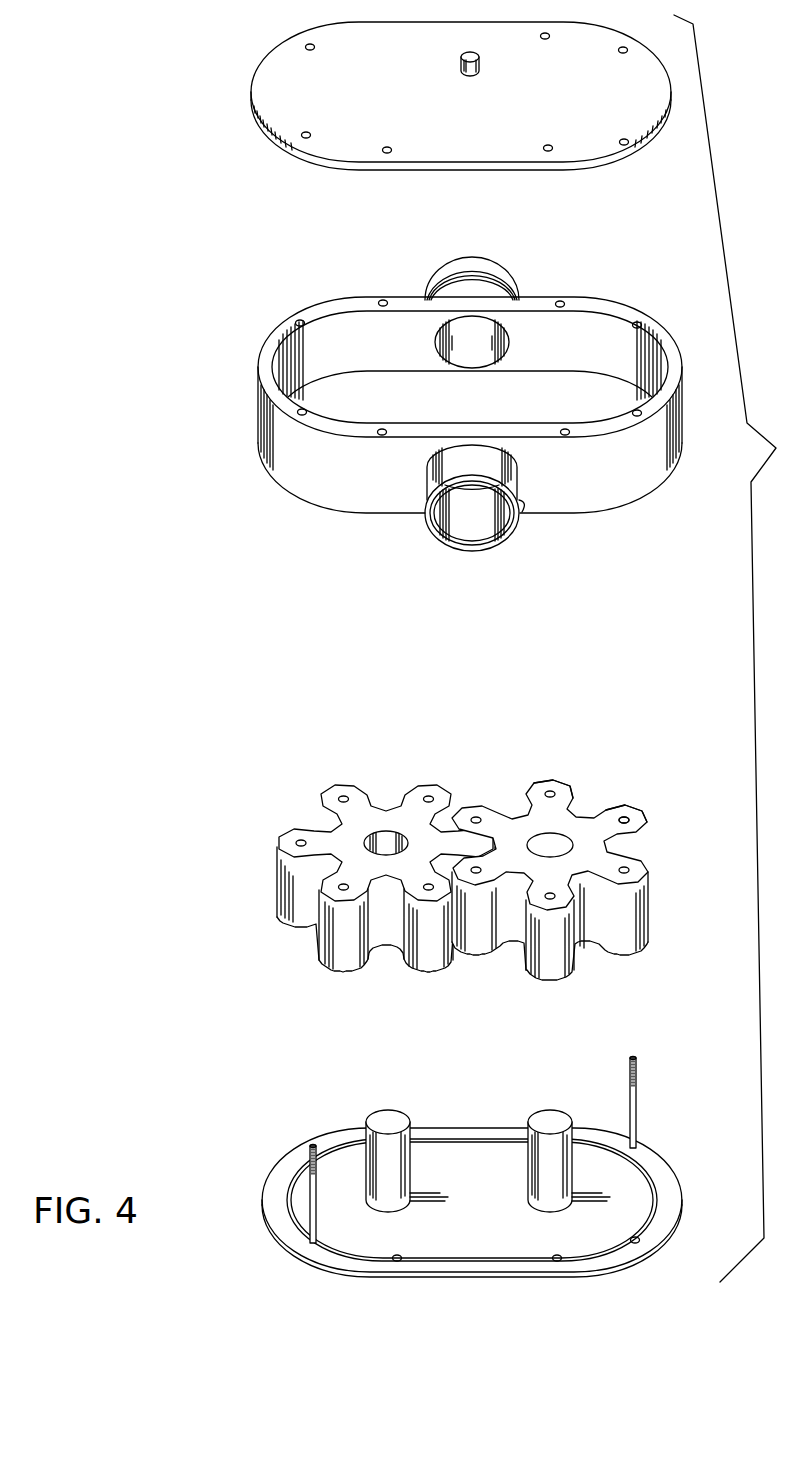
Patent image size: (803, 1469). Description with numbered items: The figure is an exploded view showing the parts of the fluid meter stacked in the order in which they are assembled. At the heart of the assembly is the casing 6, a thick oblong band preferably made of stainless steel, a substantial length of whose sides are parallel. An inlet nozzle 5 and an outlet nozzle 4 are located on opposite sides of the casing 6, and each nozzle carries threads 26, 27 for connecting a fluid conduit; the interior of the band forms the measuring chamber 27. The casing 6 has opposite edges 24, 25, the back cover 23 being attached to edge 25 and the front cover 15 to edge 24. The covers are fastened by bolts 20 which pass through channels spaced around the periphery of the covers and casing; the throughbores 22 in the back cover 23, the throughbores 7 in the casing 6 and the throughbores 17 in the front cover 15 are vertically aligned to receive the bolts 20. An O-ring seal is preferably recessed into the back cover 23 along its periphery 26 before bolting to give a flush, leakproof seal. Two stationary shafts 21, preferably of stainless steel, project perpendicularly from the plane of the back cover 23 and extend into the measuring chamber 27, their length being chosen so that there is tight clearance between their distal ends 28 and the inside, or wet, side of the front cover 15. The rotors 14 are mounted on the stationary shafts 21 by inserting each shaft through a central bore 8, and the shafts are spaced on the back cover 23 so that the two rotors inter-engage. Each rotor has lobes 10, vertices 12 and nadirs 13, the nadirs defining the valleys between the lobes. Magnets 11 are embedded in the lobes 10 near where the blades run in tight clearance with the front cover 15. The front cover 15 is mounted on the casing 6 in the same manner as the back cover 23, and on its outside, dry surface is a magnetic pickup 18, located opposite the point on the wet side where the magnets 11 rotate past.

The outlet nozzle 4 is at (514, 297).
The inlet nozzle 5 is at (517, 482).
The casing 6 is at (461, 717).
The throughbore 7 is at (643, 323).
The central bore 8 is at (563, 859).
The lobe 10 is at (603, 813).
The magnet 11 is at (630, 818).
The vertex 12 is at (553, 778).
The nadir 13 is at (593, 845).
The rotor 14 is at (485, 859).
The front cover 15 is at (455, 127).
The throughbore 17 is at (627, 137).
The magnetic pickup 18 is at (478, 62).
The bolt 20 is at (636, 1115).
The stationary shaft 21 is at (482, 1129).
The throughbore 22 is at (640, 1243).
The back cover 23 is at (457, 1230).
The edge 24 is at (288, 331).
The edge 25 is at (276, 474).
The threads 26 is at (443, 268).
The threads 27 is at (378, 409).
The distal end 28 is at (383, 1121).